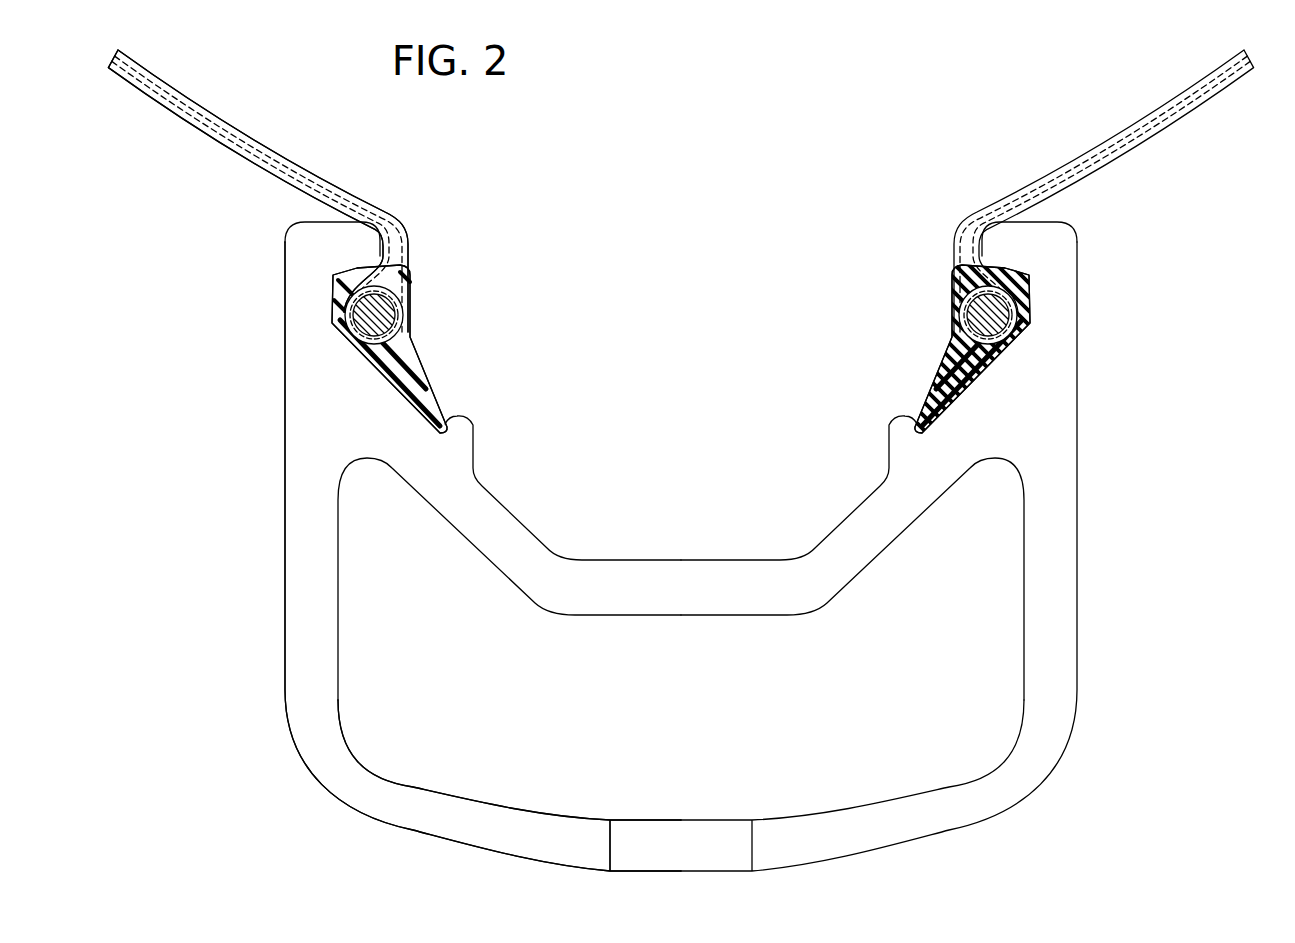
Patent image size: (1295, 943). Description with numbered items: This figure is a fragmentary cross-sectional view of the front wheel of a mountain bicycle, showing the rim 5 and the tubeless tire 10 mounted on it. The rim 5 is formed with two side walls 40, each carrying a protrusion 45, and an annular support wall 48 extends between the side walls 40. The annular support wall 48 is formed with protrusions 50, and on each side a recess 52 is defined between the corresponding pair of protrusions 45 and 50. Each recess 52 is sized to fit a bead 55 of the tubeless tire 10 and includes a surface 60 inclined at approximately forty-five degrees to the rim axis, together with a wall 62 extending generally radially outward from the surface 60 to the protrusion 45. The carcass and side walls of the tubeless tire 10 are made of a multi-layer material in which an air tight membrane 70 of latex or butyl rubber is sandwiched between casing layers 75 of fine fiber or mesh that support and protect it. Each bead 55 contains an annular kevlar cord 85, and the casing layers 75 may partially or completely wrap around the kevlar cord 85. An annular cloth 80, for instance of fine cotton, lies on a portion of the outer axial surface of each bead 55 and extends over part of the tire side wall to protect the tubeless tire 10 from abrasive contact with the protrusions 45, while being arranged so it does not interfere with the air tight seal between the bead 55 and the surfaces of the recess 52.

The rim 5 is at (1097, 427).
The tubeless tire 10 is at (1095, 120).
The side wall 40 is at (312, 594).
The protrusion 45 is at (367, 247).
The annular support wall 48 is at (835, 565).
The protrusion 50 is at (461, 429).
The recess 52 is at (447, 373).
The bead 55 is at (403, 345).
The surface 60 is at (403, 397).
The wall 62 is at (335, 312).
The air tight membrane 70 is at (206, 108).
The casing layers 75 is at (210, 134).
The annular cloth 80 is at (340, 212).
The kevlar cord 85 is at (383, 315).